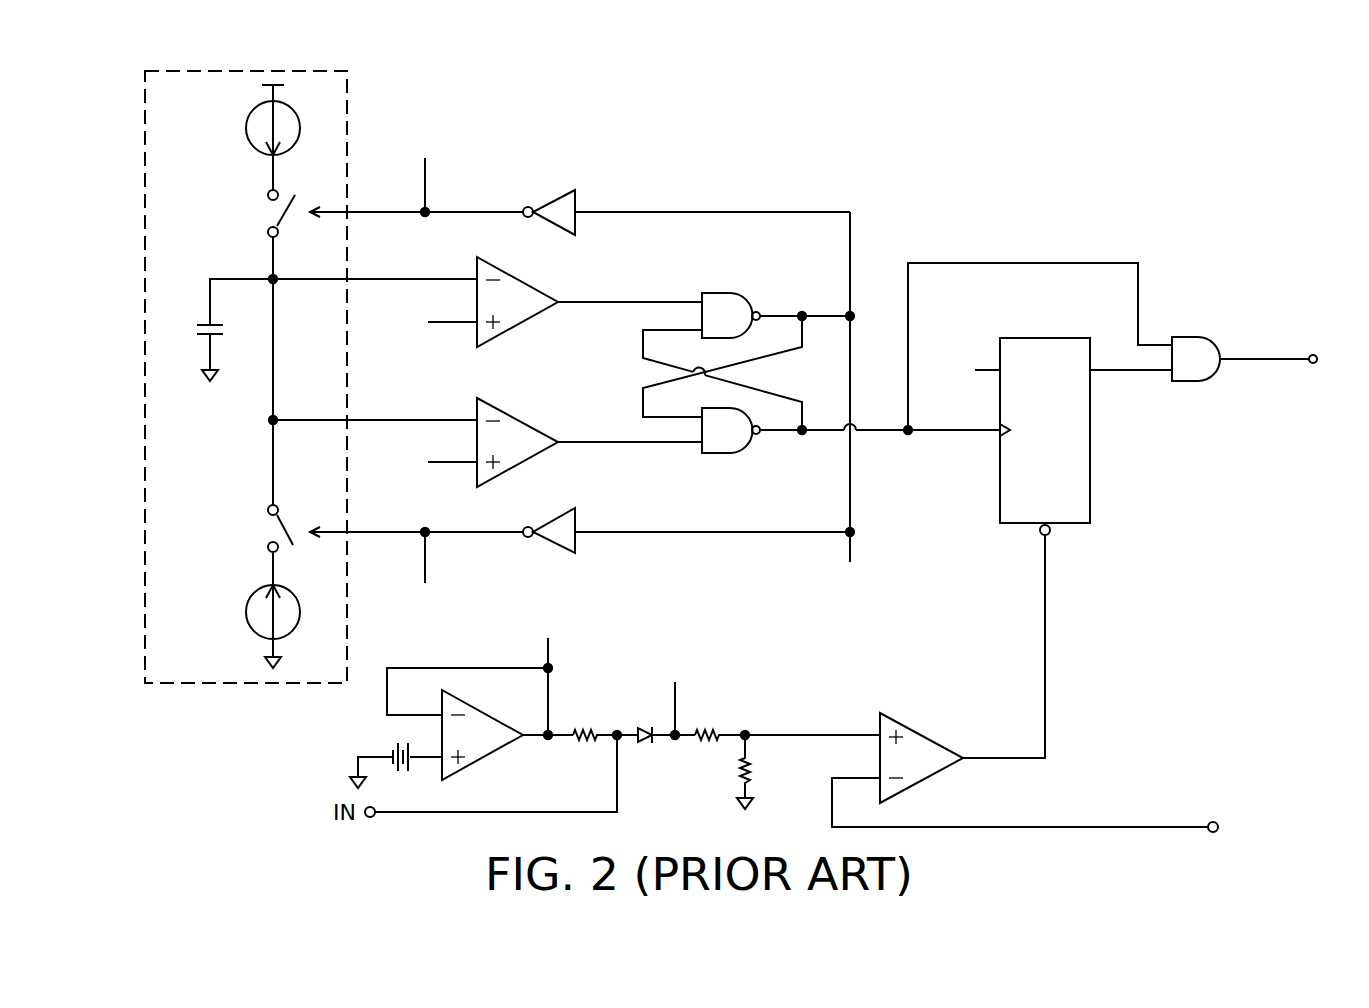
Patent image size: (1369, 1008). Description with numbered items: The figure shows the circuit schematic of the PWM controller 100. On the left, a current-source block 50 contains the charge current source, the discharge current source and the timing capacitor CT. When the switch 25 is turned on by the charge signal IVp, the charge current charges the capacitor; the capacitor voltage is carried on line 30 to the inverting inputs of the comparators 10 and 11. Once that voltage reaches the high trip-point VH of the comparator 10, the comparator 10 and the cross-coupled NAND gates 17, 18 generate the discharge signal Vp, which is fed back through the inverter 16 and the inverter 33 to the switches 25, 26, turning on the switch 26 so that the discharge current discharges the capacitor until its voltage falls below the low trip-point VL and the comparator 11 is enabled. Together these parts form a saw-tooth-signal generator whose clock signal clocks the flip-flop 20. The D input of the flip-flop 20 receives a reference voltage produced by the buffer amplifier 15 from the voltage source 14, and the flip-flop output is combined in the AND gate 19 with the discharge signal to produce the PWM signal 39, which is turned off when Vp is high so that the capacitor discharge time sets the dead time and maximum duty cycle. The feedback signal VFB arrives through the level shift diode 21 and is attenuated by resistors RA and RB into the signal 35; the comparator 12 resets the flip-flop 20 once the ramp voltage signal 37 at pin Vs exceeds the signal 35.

The PWM controller 100 is at (1214, 181).
The current source block 50 is at (140, 165).
The switch 25 is at (265, 212).
The switch 26 is at (265, 525).
The inverter 16 is at (548, 190).
The capacitor voltage line 30 is at (380, 279).
The comparator 10 is at (517, 279).
The comparator 11 is at (525, 419).
The NAND gate 17 is at (725, 293).
The NAND gate 18 is at (718, 453).
The inverter / IVP line 33 is at (700, 540).
The flip-flop 20 is at (1090, 485).
The AND gate 19 is at (1185, 383).
The PWM signal 39 is at (1263, 359).
The operational amplifier 15 is at (488, 757).
The reference voltage source 14 is at (395, 745).
The level shift diode 21 is at (645, 750).
The signal 35 is at (790, 735).
The comparator 12 is at (925, 737).
The voltage signal 37 is at (1110, 827).